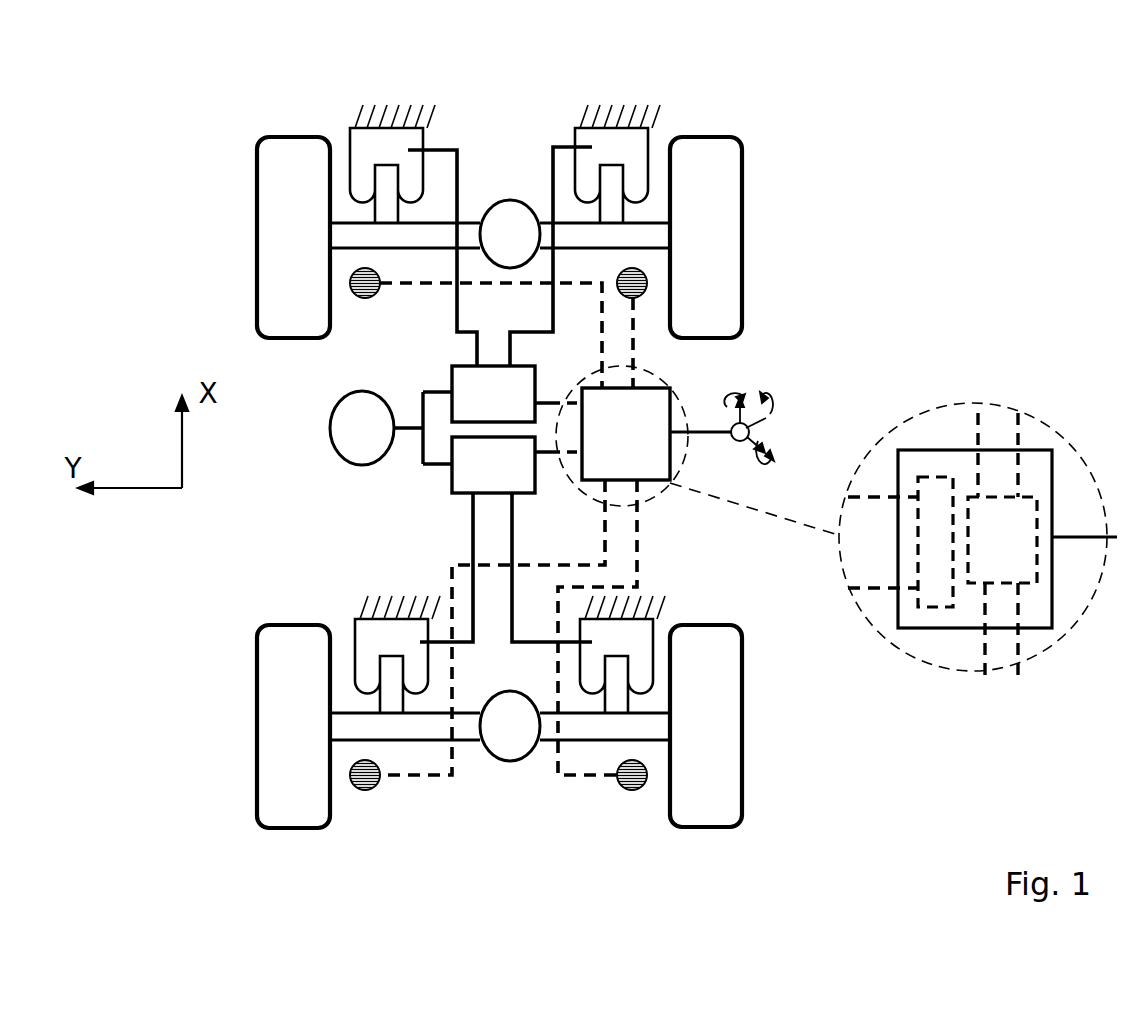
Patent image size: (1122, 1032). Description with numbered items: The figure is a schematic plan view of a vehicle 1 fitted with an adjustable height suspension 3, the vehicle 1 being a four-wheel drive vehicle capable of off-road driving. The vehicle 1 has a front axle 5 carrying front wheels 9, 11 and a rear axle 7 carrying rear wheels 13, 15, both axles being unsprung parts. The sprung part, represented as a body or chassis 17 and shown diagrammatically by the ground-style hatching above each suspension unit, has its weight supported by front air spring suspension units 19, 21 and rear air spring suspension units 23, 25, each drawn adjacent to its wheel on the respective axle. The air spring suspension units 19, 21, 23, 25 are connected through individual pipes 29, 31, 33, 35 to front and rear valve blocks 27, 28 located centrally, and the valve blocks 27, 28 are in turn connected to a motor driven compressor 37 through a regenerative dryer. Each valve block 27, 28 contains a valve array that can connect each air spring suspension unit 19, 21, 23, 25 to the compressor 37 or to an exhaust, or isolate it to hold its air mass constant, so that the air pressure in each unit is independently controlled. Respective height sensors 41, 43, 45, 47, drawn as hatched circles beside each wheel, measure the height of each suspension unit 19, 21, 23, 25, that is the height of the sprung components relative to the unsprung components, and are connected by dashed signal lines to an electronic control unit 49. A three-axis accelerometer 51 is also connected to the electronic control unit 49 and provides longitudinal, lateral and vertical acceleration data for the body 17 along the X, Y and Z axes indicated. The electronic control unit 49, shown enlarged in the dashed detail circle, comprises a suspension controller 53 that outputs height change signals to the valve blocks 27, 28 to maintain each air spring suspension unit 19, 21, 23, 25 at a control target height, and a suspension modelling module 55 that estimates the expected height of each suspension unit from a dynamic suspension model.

The vehicle 1 is at (886, 155).
The adjustable height suspension 3 is at (684, 105).
The front axle 5 is at (345, 235).
The rear axle 7 is at (340, 723).
The front wheel 9 is at (260, 185).
The front wheel 11 is at (733, 203).
The rear wheel 13 is at (267, 685).
The rear wheel 15 is at (730, 773).
The body or chassis 17 is at (389, 112).
The front air spring suspension unit 19 is at (355, 142).
The front air spring suspension unit 21 is at (577, 142).
The rear air spring suspension unit 23 is at (357, 630).
The rear air spring suspension unit 25 is at (648, 637).
The front valve block 27 is at (493, 394).
The rear valve block 28 is at (493, 465).
The pipe 29 is at (458, 188).
The pipe 31 is at (552, 155).
The pipe 33 is at (472, 522).
The pipe 35 is at (515, 522).
The motor driven compressor 37 is at (391, 428).
The height sensor 41 is at (369, 299).
The height sensor 43 is at (640, 300).
The height sensor 45 is at (368, 792).
The height sensor 47 is at (637, 792).
The electronic control unit 49 is at (1030, 450).
The three-axis accelerometer 51 is at (748, 430).
The suspension controller 53 is at (932, 600).
The suspension modelling module 55 is at (1023, 562).